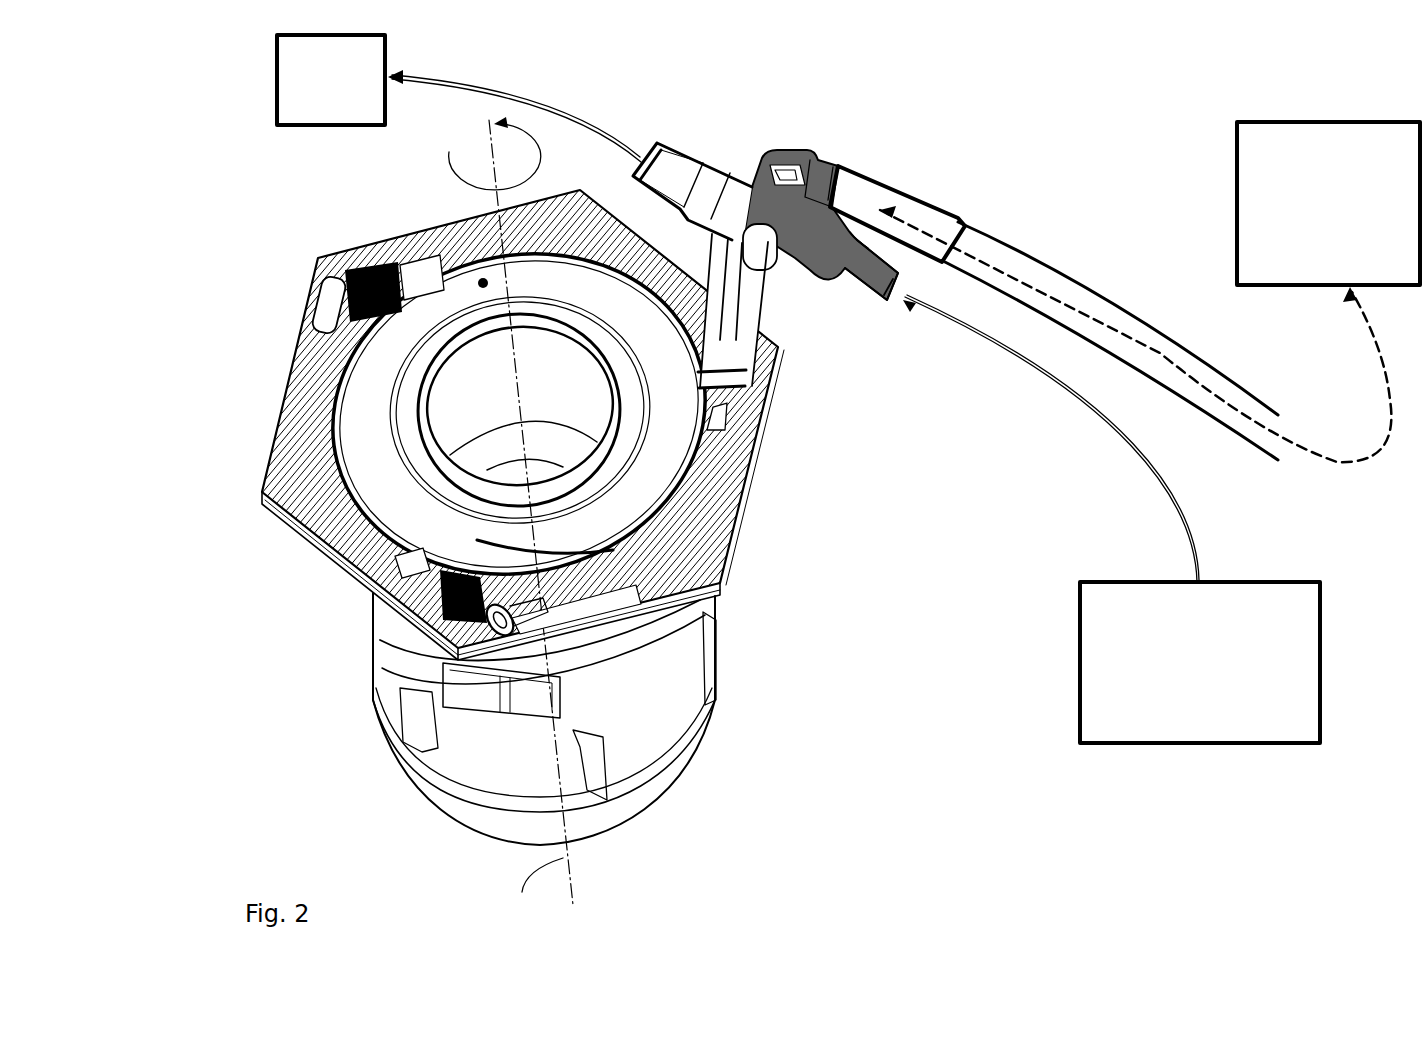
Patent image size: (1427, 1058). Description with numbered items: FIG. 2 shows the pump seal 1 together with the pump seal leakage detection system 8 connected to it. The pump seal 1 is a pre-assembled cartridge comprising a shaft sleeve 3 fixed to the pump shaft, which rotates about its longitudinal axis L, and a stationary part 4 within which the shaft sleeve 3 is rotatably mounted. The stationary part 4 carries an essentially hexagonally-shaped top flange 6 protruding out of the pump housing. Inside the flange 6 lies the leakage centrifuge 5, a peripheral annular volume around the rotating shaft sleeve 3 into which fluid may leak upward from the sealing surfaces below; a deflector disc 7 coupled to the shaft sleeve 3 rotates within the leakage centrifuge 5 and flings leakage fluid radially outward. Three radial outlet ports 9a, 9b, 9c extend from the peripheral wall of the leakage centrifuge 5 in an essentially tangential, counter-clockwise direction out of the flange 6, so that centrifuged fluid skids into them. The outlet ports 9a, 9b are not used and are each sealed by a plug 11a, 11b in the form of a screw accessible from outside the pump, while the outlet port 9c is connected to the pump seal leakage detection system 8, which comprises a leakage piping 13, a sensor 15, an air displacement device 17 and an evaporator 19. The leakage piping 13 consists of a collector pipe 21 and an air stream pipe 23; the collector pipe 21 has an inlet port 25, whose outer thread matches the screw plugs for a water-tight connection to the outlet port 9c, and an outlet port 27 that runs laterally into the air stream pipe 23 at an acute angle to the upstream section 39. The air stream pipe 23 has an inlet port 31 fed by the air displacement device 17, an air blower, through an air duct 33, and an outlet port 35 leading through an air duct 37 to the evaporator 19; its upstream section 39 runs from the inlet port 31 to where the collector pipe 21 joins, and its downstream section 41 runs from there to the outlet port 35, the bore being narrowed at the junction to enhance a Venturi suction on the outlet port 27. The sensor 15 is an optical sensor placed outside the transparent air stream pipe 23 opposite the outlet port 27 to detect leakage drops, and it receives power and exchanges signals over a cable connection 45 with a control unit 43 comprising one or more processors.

The pump seal 1 is at (120, 278).
The shaft sleeve 3 is at (452, 382).
The stationary part 4 is at (650, 620).
The leakage centrifuge 5 is at (322, 445).
The top flange 6 is at (693, 542).
The deflector disc 7 is at (483, 283).
The pump seal leakage detection system 8 is at (1120, 95).
The outlet port 9a is at (412, 268).
The outlet port 9b is at (427, 570).
The outlet port 9c is at (720, 413).
The plug 11a is at (320, 295).
The plug 11b is at (478, 630).
The leakage piping 13 is at (818, 100).
The sensor 15 is at (765, 160).
The air displacement device 17 is at (1200, 662).
The evaporator 19 is at (331, 80).
The collector pipe 21 is at (775, 362).
The air stream pipe 23 is at (820, 292).
The inlet port 25 is at (747, 383).
The outlet port 27 is at (758, 240).
The inlet port 31 is at (893, 305).
The air duct 33 is at (1078, 395).
The outlet port 35 is at (632, 142).
The air duct 37 is at (576, 110).
The upstream section 39 is at (855, 275).
The downstream section 41 is at (685, 178).
The control unit 43 is at (1328, 203).
The cable connection 45 is at (1075, 282).
The longitudinal axis L is at (535, 891).